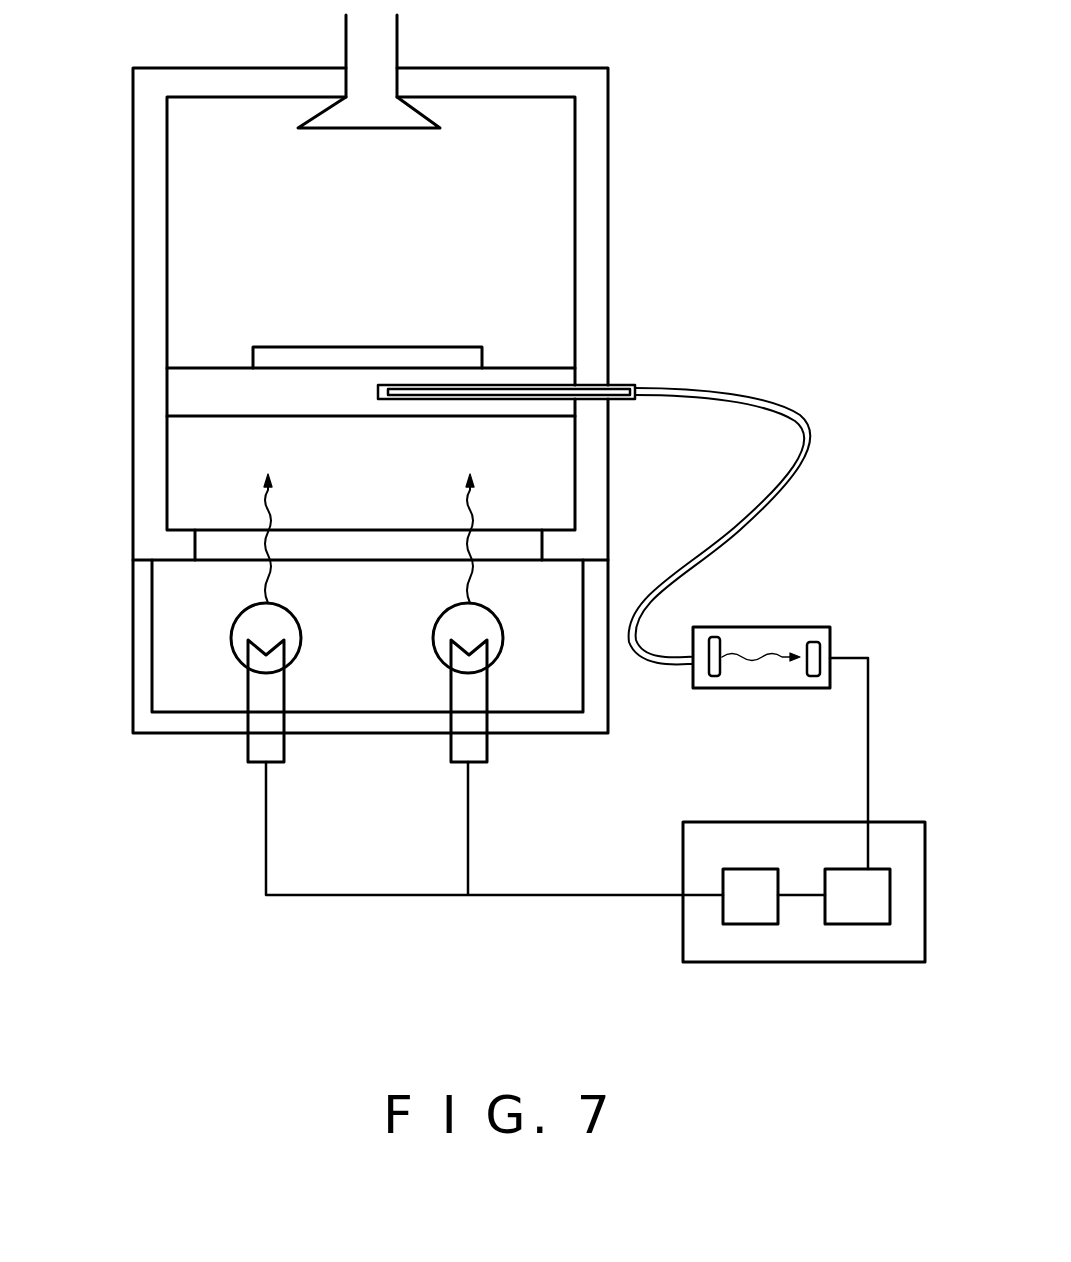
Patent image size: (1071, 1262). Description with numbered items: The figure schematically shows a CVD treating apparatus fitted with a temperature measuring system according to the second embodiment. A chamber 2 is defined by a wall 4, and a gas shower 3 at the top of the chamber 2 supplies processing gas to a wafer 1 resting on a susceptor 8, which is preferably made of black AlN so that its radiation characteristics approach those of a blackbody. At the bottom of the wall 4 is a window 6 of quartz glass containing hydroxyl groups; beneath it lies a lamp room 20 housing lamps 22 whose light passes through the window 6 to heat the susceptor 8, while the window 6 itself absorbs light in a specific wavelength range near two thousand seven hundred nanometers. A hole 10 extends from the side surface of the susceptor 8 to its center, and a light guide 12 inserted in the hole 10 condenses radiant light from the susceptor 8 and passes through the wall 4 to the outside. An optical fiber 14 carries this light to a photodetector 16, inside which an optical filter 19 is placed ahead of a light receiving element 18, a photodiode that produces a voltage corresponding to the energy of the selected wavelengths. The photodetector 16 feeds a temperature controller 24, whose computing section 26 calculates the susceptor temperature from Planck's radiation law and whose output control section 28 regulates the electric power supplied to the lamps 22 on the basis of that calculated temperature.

The wafer 1 is at (362, 355).
The chamber 2 is at (548, 169).
The gas shower 3 is at (388, 55).
The wall 4 is at (604, 176).
The window 6 is at (220, 545).
The susceptor 8 is at (183, 395).
The hole 10 is at (520, 405).
The light guide 12 is at (590, 383).
The optical fiber 14 is at (815, 427).
The photodetector 16 is at (770, 627).
The light receiving element 18 is at (816, 648).
The optical filter 19 is at (714, 688).
The lamp room 20 is at (170, 637).
The lamps 22 is at (262, 690).
The temperature controller 24 is at (895, 822).
The computing section 26 is at (860, 924).
The output control section 28 is at (745, 924).